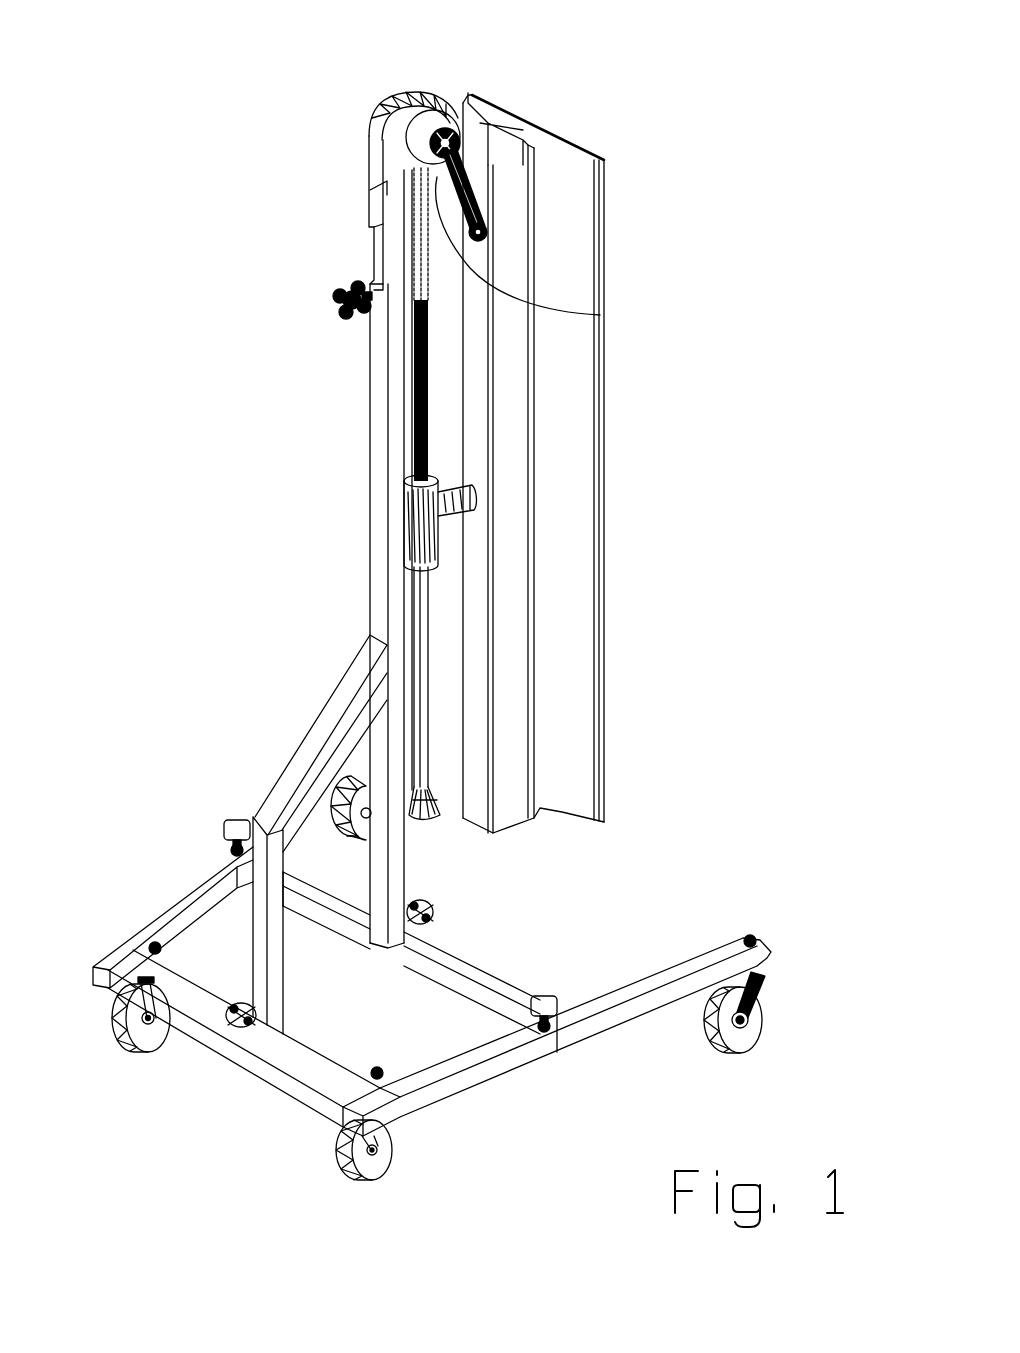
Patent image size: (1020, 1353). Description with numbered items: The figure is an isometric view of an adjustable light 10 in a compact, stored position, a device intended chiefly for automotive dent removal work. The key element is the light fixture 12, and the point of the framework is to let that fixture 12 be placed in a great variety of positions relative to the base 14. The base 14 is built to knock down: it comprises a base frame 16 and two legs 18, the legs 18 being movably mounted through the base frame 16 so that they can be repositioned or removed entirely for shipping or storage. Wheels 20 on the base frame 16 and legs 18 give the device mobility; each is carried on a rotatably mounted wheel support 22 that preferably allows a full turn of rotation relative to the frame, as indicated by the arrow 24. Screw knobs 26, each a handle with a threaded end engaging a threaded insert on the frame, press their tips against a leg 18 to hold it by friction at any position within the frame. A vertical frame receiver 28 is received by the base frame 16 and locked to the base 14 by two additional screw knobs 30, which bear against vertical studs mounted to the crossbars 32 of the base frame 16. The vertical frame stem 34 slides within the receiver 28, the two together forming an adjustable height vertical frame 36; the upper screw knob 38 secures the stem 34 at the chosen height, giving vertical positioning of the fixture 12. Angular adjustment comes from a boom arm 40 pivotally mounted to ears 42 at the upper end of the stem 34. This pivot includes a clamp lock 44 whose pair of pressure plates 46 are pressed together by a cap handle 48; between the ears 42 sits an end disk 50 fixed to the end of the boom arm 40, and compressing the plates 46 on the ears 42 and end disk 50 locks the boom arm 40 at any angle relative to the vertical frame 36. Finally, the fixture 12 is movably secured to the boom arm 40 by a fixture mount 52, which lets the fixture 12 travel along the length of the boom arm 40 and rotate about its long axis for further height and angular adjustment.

The adjustable light 10 is at (268, 180).
The light fixture 12 is at (640, 178).
The base 14 is at (612, 868).
The base frame 16 is at (497, 960).
The legs 18 is at (108, 960).
The wheels 20 is at (175, 1052).
The wheel supports 22 is at (245, 1033).
The arrow 24 is at (683, 1010).
The screw knobs 26 is at (232, 822).
The vertical frame receiver 28 is at (370, 402).
The screw knobs 30 is at (452, 940).
The crossbars 32 is at (468, 966).
The vertical frame stem 34 is at (368, 250).
The adjustable height vertical frame 36 is at (340, 357).
The upper screw knob 38 is at (336, 296).
The boom arm 40 is at (415, 600).
The ears 42 is at (368, 153).
The clamp lock 44 is at (450, 82).
The pressure plates 46 is at (407, 95).
The cap handle 48 is at (600, 315).
The end disk 50 is at (442, 96).
The fixture mount 52 is at (446, 557).